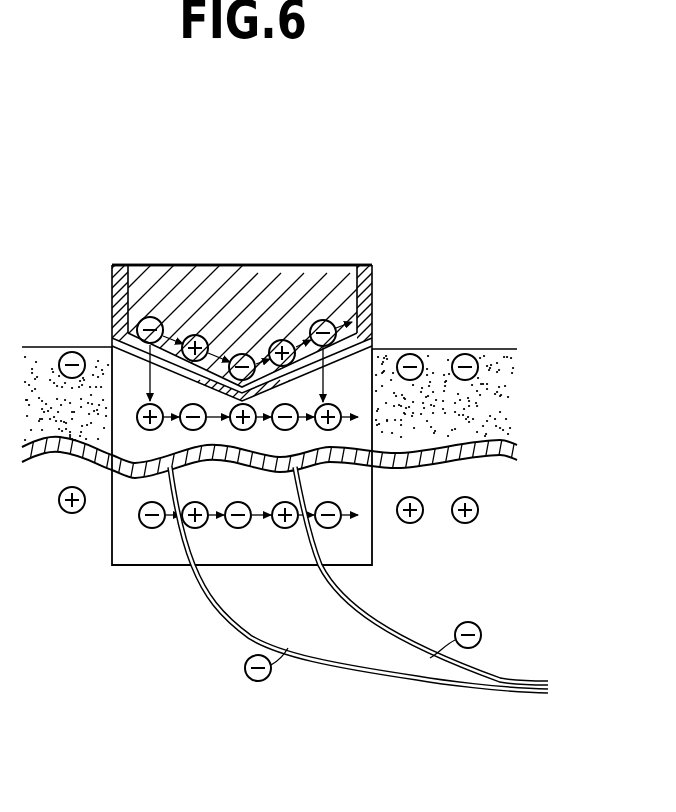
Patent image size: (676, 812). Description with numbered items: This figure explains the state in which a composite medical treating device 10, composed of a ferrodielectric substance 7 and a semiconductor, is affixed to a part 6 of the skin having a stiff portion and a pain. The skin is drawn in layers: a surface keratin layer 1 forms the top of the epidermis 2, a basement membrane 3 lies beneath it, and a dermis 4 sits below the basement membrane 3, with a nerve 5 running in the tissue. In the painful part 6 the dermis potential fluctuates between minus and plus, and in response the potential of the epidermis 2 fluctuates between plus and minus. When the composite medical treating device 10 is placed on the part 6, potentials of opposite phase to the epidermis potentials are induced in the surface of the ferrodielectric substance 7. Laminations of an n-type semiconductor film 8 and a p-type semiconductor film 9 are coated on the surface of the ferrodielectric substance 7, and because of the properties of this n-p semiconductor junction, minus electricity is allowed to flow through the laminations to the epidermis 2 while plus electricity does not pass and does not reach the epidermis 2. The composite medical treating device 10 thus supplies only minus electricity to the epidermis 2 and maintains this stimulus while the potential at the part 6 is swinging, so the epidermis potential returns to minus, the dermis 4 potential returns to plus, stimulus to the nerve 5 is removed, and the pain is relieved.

The surface keratin layer 1 is at (505, 349).
The epidermis 2 is at (495, 392).
The basement membrane 3 is at (513, 448).
The dermis 4 is at (497, 500).
The nerve 5 is at (538, 690).
The part having a stiff portion and a pain 6 is at (352, 380).
The ferrodielectric substance 7 is at (243, 288).
The n-type semiconductor film 8 is at (122, 265).
The p-type semiconductor film 9 is at (115, 265).
The composite medical treating device 10 is at (298, 282).